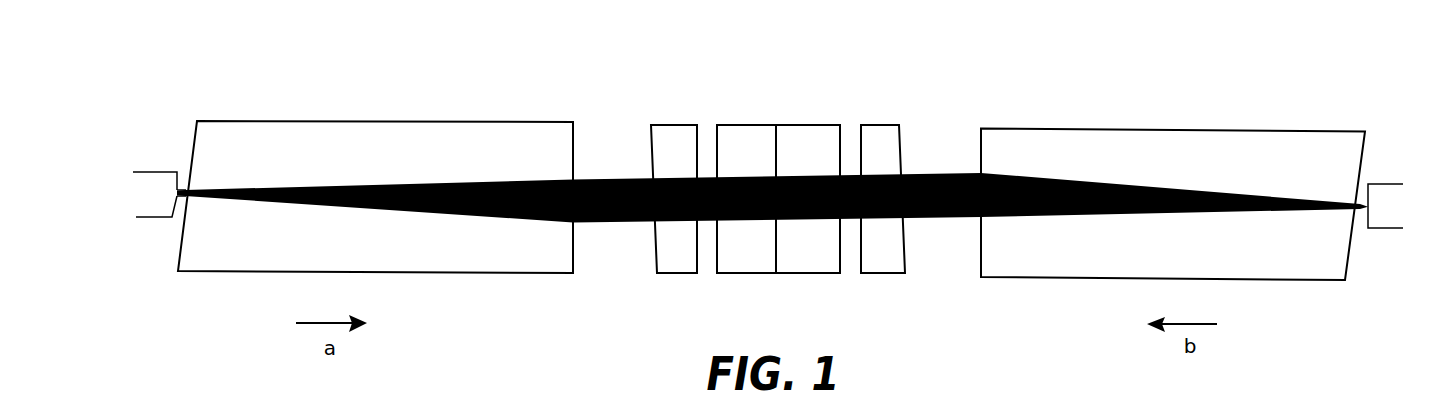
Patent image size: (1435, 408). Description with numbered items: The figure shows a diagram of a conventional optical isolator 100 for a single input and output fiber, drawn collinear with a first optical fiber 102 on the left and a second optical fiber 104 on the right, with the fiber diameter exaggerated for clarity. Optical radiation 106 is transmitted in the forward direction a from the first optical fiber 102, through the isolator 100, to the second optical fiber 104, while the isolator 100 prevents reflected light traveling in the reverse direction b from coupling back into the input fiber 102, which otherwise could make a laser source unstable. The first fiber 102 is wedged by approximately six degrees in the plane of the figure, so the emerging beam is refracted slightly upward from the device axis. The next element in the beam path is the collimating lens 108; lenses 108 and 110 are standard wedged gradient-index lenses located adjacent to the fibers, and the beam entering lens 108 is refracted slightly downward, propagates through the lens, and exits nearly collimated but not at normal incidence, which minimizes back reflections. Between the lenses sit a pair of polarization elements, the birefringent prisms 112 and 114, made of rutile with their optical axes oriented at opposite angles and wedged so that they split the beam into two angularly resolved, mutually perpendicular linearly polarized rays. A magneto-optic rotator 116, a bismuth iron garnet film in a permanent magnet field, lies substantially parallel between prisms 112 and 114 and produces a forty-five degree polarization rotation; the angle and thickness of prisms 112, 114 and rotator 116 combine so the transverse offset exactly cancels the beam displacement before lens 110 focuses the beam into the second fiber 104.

The optical isolator 100 is at (633, 45).
The first optical fiber 102 is at (140, 220).
The second optical fiber 104 is at (1388, 230).
The optical radiation 106 is at (187, 190).
The collimating lens 108 is at (299, 140).
The focusing lens 110 is at (1117, 143).
The birefringent prism 112 is at (674, 176).
The birefringent prism 114 is at (882, 176).
The magneto-optic rotator 116 is at (778, 176).